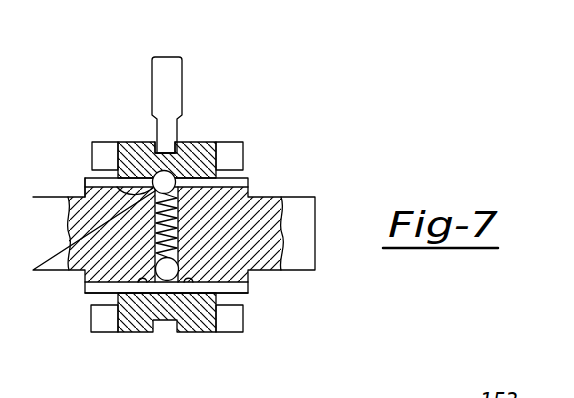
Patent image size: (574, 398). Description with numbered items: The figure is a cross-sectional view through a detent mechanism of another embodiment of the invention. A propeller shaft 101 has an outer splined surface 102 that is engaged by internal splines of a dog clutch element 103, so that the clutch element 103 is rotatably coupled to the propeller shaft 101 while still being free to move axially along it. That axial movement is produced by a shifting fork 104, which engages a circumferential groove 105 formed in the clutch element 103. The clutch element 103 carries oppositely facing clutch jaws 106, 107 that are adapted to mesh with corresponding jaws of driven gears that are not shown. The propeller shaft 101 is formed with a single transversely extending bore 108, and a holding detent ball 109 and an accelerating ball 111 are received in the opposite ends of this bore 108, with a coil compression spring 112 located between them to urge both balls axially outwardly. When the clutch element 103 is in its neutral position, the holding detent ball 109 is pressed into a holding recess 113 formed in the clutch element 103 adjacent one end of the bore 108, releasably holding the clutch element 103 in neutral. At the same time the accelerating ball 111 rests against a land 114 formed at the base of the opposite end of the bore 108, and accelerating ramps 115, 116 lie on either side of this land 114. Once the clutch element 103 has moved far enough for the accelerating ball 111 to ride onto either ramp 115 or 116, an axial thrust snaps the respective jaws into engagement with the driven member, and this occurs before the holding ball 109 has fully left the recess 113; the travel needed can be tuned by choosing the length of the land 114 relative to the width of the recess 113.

The propeller shaft 101 is at (285, 200).
The outer splined surface 102 is at (241, 176).
The dog clutch element 103 is at (192, 141).
The shifting fork 104 is at (175, 74).
The circumferential groove 105 is at (181, 142).
The clutch jaw 106 is at (104, 141).
The clutch jaw 107 is at (228, 141).
The bore 108 is at (249, 282).
The holding detent ball 109 is at (93, 177).
The accelerating ball 111 is at (155, 265).
The coil compression spring 112 is at (188, 228).
The holding recess 113 is at (147, 142).
The land 114 is at (176, 265).
The accelerating ramp 115 is at (146, 286).
The accelerating ramp 116 is at (183, 284).